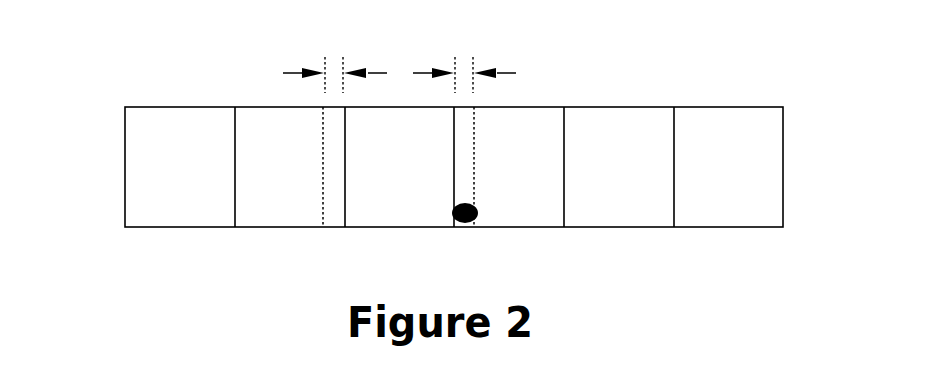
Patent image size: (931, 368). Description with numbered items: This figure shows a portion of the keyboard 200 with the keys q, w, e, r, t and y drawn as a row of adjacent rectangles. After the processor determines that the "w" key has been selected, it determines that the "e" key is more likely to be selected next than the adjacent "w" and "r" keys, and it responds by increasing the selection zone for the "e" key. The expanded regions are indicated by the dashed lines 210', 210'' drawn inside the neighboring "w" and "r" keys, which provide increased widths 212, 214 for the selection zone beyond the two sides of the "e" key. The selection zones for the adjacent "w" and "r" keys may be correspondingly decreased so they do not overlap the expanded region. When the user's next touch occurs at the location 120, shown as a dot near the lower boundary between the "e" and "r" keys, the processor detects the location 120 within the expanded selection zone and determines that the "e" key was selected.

The keyboard row of keys 200 is at (235, 140).
The dashed lines 210' is at (240, 134).
The increased width 212 is at (334, 71).
The increased width 214 is at (465, 71).
The dashed lines 210'' is at (554, 145).
The location 120 is at (469, 225).